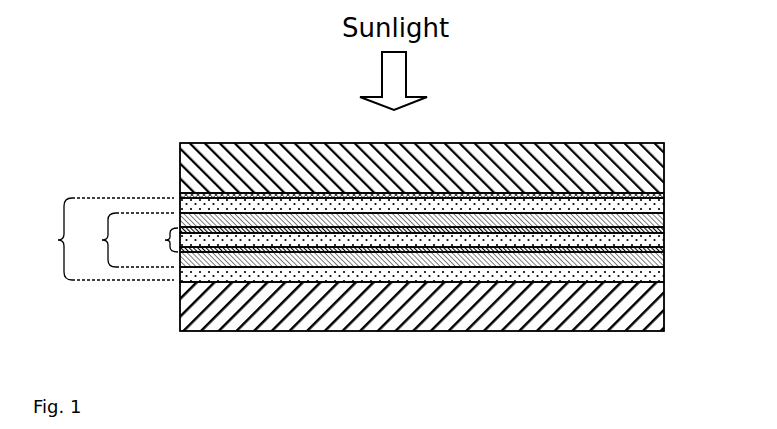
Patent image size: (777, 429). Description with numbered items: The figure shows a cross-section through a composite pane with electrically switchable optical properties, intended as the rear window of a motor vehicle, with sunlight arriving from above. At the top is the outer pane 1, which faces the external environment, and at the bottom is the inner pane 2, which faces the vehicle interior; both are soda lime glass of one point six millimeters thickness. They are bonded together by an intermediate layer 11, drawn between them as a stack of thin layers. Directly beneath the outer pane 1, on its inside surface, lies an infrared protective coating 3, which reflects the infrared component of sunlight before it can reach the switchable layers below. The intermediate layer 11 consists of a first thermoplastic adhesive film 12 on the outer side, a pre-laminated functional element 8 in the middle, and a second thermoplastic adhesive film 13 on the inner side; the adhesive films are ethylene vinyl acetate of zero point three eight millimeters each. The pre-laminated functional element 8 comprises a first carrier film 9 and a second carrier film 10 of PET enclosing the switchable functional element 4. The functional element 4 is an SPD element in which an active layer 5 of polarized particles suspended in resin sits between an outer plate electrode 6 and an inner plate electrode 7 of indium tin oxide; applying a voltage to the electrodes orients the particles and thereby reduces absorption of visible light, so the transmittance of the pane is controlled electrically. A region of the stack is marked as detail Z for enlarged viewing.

The outer pane 1 is at (190, 143).
The inner pane 2 is at (190, 331).
The infrared protective coating 3 is at (662, 195).
The functional element 4 is at (165, 240).
The active layer 5 is at (657, 240).
The outer plate electrode 6 is at (663, 230).
The inner plate electrode 7 is at (663, 250).
The pre-laminated functional element 8 is at (102, 240).
The first carrier film 9 is at (662, 220).
The second carrier film 10 is at (662, 262).
The intermediate layer 11 is at (97, 239).
The first thermoplastic adhesive film 12 is at (657, 207).
The second thermoplastic adhesive film 13 is at (660, 277).
The detail Z is at (278, 203).